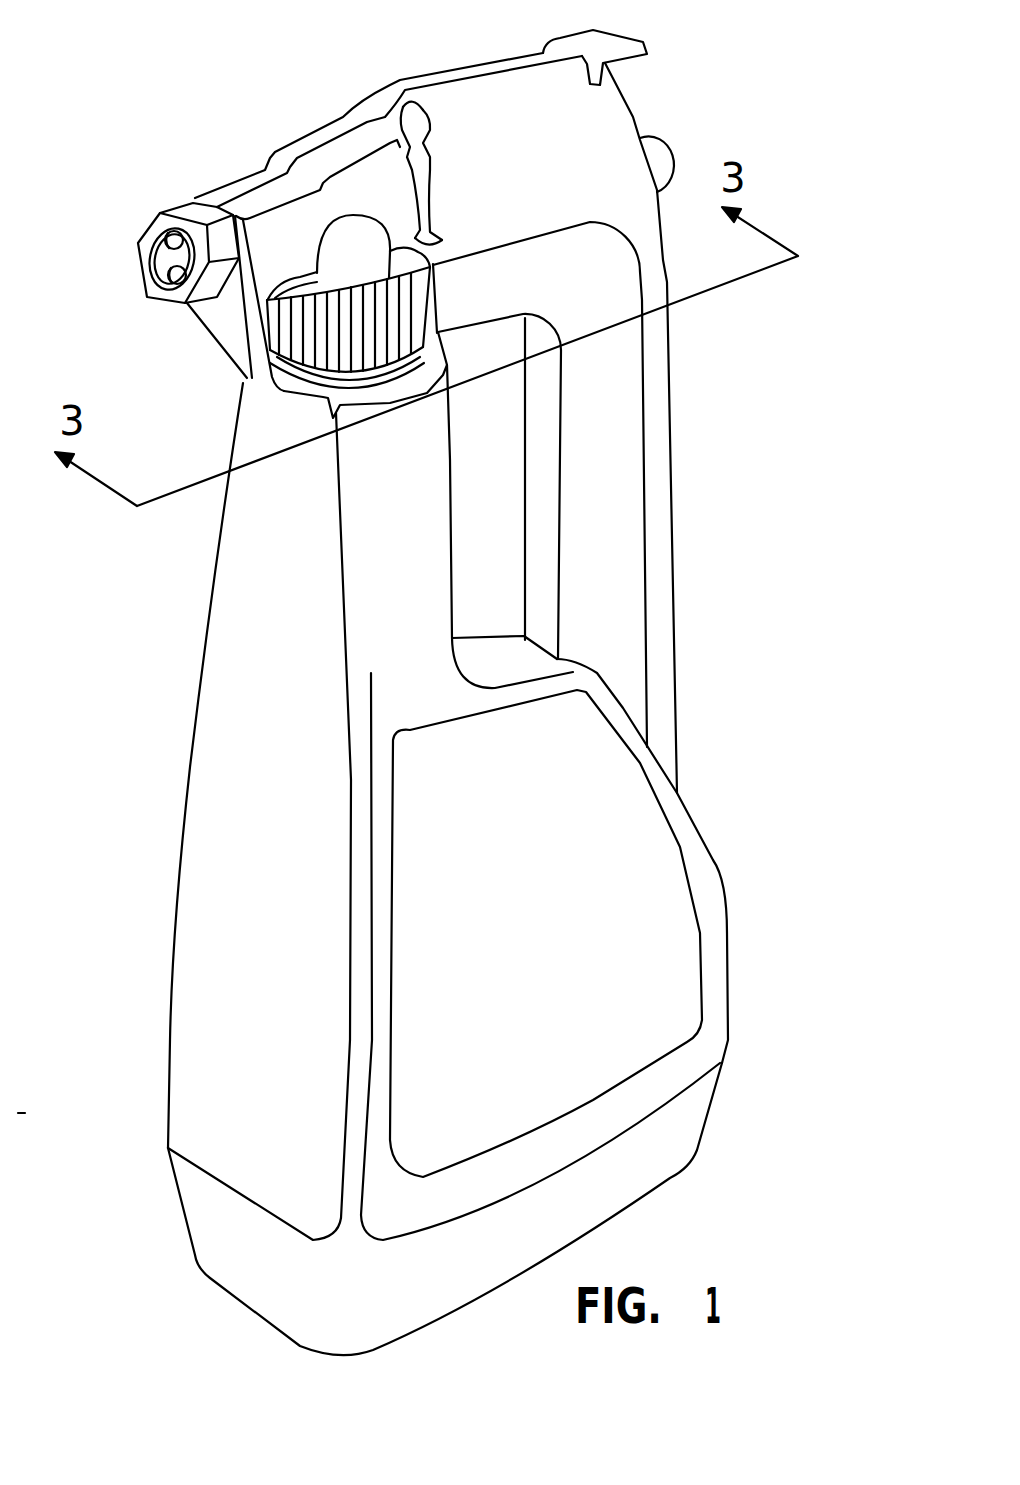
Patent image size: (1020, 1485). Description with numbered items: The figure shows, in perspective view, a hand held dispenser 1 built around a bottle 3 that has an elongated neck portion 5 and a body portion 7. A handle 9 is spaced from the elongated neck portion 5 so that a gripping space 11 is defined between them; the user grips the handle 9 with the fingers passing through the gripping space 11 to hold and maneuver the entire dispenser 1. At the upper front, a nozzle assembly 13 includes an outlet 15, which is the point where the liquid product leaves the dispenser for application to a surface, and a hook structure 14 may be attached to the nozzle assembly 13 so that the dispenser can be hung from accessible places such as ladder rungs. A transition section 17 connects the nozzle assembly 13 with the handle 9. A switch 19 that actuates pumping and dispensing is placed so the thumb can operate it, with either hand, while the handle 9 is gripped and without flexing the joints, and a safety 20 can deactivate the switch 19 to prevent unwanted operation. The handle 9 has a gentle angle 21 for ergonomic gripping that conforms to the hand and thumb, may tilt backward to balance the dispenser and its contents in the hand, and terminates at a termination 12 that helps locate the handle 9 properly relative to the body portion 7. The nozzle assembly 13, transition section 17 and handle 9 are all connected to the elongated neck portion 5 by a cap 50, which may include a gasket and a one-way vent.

The hand held dispenser 1 is at (148, 911).
The bottle 3 is at (218, 990).
The elongated neck portion 5 is at (258, 477).
The body portion 7 is at (652, 913).
The handle 9 is at (676, 623).
The gripping space 11 is at (508, 548).
The handle termination 12 is at (677, 718).
The nozzle assembly 13 is at (262, 170).
The hook structure 14 is at (238, 313).
The outlet 15 is at (163, 232).
The transition section 17 is at (458, 77).
The switch 19 is at (655, 147).
The safety 20 is at (648, 50).
The gentle angle 21 is at (668, 280).
The cap 50 is at (335, 347).